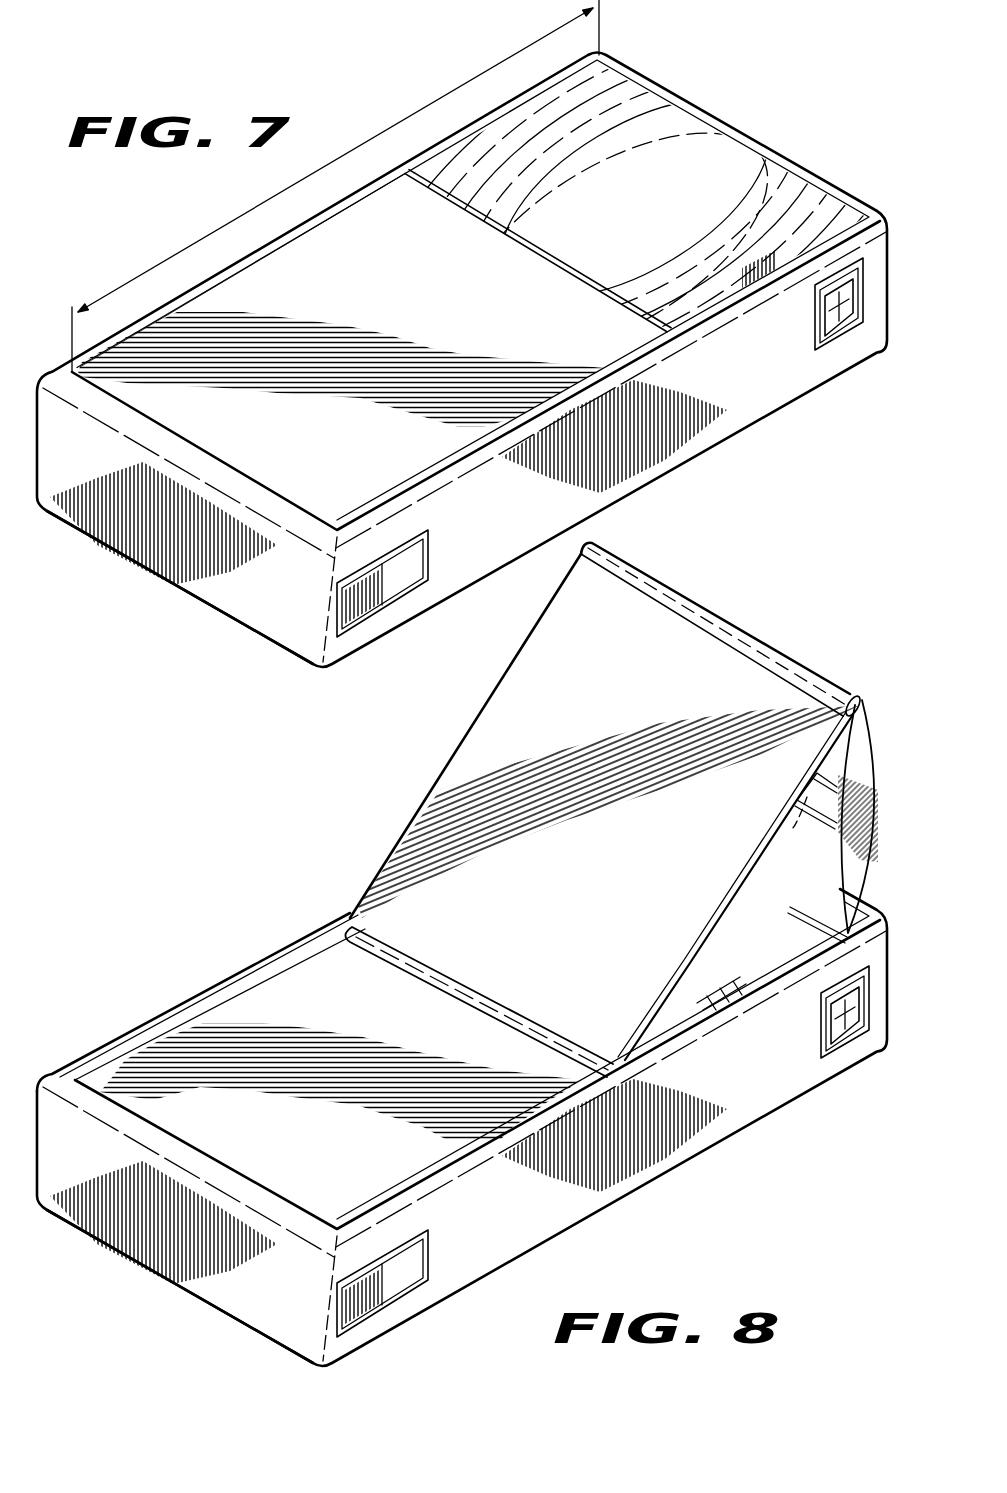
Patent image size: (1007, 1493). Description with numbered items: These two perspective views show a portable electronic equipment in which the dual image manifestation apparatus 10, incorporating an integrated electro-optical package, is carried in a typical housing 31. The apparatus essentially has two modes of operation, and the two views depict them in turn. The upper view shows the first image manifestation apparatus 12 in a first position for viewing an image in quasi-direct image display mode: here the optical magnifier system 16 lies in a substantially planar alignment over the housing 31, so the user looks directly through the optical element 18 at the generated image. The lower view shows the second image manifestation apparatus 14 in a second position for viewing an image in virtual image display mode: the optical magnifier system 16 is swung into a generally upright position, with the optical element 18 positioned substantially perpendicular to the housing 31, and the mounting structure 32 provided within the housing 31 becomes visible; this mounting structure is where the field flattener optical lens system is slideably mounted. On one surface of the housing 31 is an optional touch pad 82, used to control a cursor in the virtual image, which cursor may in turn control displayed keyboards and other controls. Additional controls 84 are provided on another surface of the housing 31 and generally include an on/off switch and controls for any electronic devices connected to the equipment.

In FIG. 7, the dual image manifestation apparatus 10 is at (107, 195).
In FIG. 8, the dual image manifestation apparatus 10 is at (815, 1323).
In FIG. 7, the first image manifestation apparatus 12 is at (756, 110).
In FIG. 8, the second image manifestation apparatus 14 is at (626, 1244).
In FIG. 7, the optical magnifier system 16 is at (372, 138).
In FIG. 8, the optical magnifier system 16 is at (766, 620).
In FIG. 7, the optical element 18 is at (624, 194).
In FIG. 8, the optical element 18 is at (804, 891).
In FIG. 7, the housing 31 is at (196, 592).
In FIG. 8, the housing 31 is at (180, 1286).
In FIG. 8, the mounting structure 32 is at (350, 915).
In FIG. 7, the touch pad 82 is at (841, 330).
In FIG. 8, the touch pad 82 is at (843, 1030).
In FIG. 7, the additional controls 84 is at (357, 618).
In FIG. 8, the additional controls 84 is at (360, 1318).